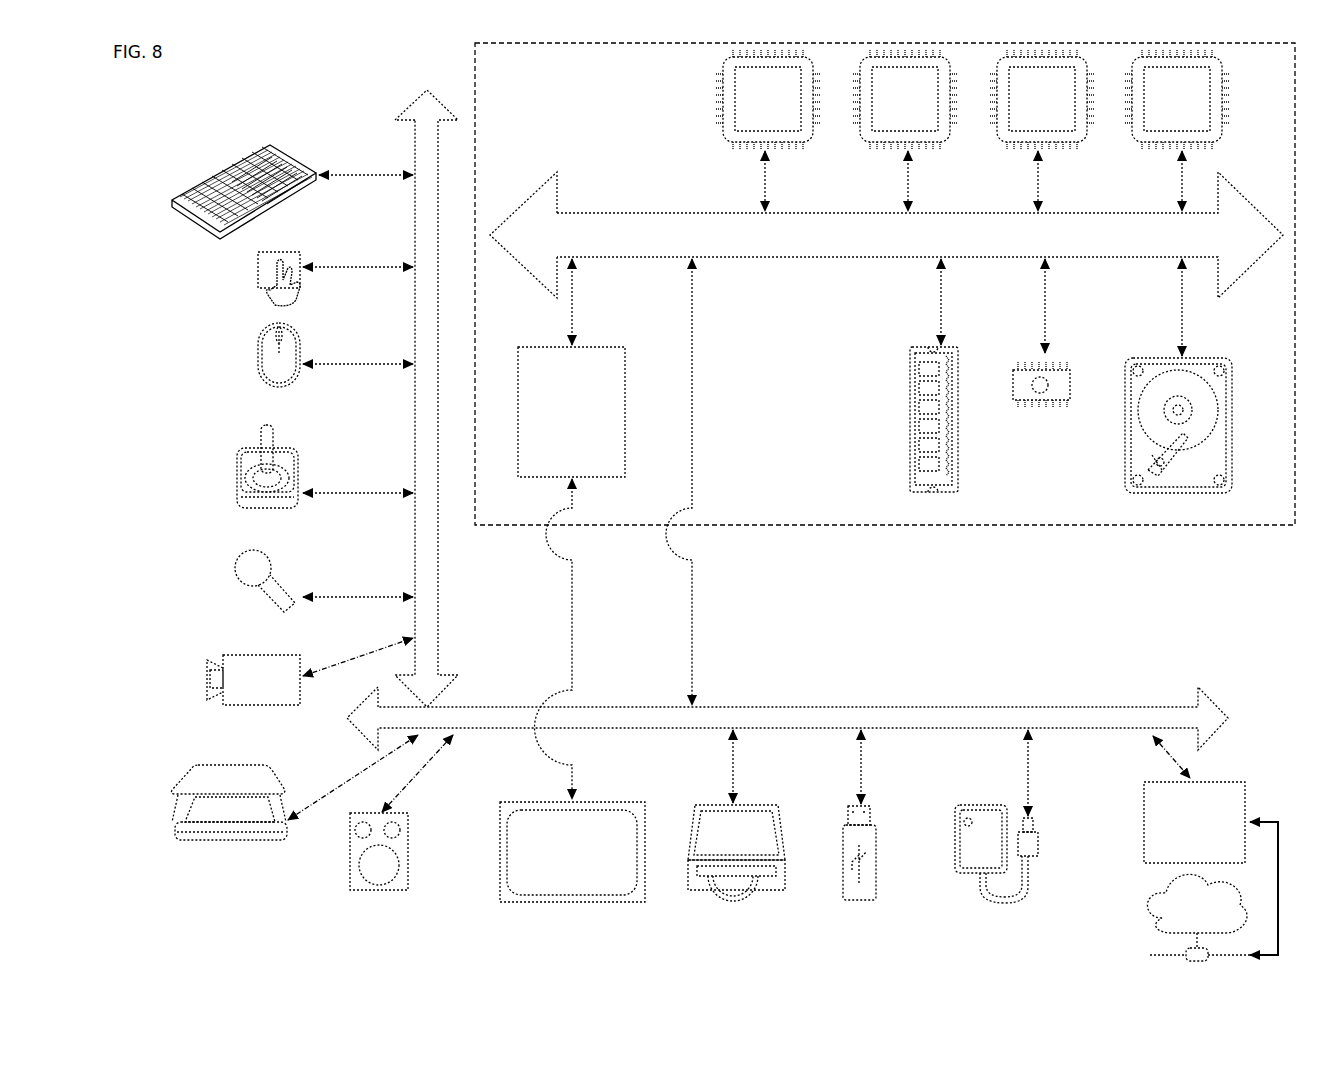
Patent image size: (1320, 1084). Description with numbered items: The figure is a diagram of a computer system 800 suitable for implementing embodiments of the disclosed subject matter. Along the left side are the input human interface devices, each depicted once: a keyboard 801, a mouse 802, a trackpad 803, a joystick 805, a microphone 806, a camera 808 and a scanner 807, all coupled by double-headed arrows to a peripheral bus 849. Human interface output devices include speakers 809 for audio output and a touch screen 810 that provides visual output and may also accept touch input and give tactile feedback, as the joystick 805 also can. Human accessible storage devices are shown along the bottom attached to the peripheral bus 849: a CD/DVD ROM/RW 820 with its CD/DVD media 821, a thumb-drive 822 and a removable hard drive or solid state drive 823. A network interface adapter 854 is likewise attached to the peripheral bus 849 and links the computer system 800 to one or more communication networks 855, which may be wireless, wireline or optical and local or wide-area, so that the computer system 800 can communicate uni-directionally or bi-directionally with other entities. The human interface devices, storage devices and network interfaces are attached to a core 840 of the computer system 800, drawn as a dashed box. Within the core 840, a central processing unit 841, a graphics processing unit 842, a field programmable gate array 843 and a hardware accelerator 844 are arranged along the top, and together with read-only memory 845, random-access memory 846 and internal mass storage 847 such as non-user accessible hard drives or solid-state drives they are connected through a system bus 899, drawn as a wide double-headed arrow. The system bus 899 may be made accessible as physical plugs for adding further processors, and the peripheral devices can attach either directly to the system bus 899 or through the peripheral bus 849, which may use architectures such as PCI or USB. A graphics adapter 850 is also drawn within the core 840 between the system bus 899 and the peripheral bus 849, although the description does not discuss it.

The computer system 800 is at (701, 502).
The keyboard 801 is at (172, 206).
The mouse 802 is at (258, 358).
The trackpad 803 is at (258, 276).
The joystick 805 is at (237, 494).
The microphone 806 is at (237, 571).
The scanner 807 is at (175, 827).
The camera 808 is at (207, 682).
The speakers 809 is at (378, 890).
The touch screen 810 is at (570, 902).
The CD/DVD ROM/RW 820 is at (754, 840).
The CD/DVD media 821 is at (720, 898).
The thumb-drive 822 is at (862, 900).
The removable hard drive or solid state drive 823 is at (958, 880).
The core 840 is at (877, 525).
The central processing unit 841 is at (768, 130).
The graphics processing unit 842 is at (905, 130).
The field programmable gate array 843 is at (1042, 130).
The accelerator 844 is at (1177, 130).
The read-only memory 845 is at (1033, 408).
The random-access memory 846 is at (910, 405).
The internal mass storage 847 is at (1150, 358).
The peripheral bus 849 is at (397, 128).
The graphics adapter 850 is at (571, 529).
The network interface adapter 854 is at (1211, 845).
The communication network 855 is at (1150, 918).
The system bus 899 is at (886, 235).